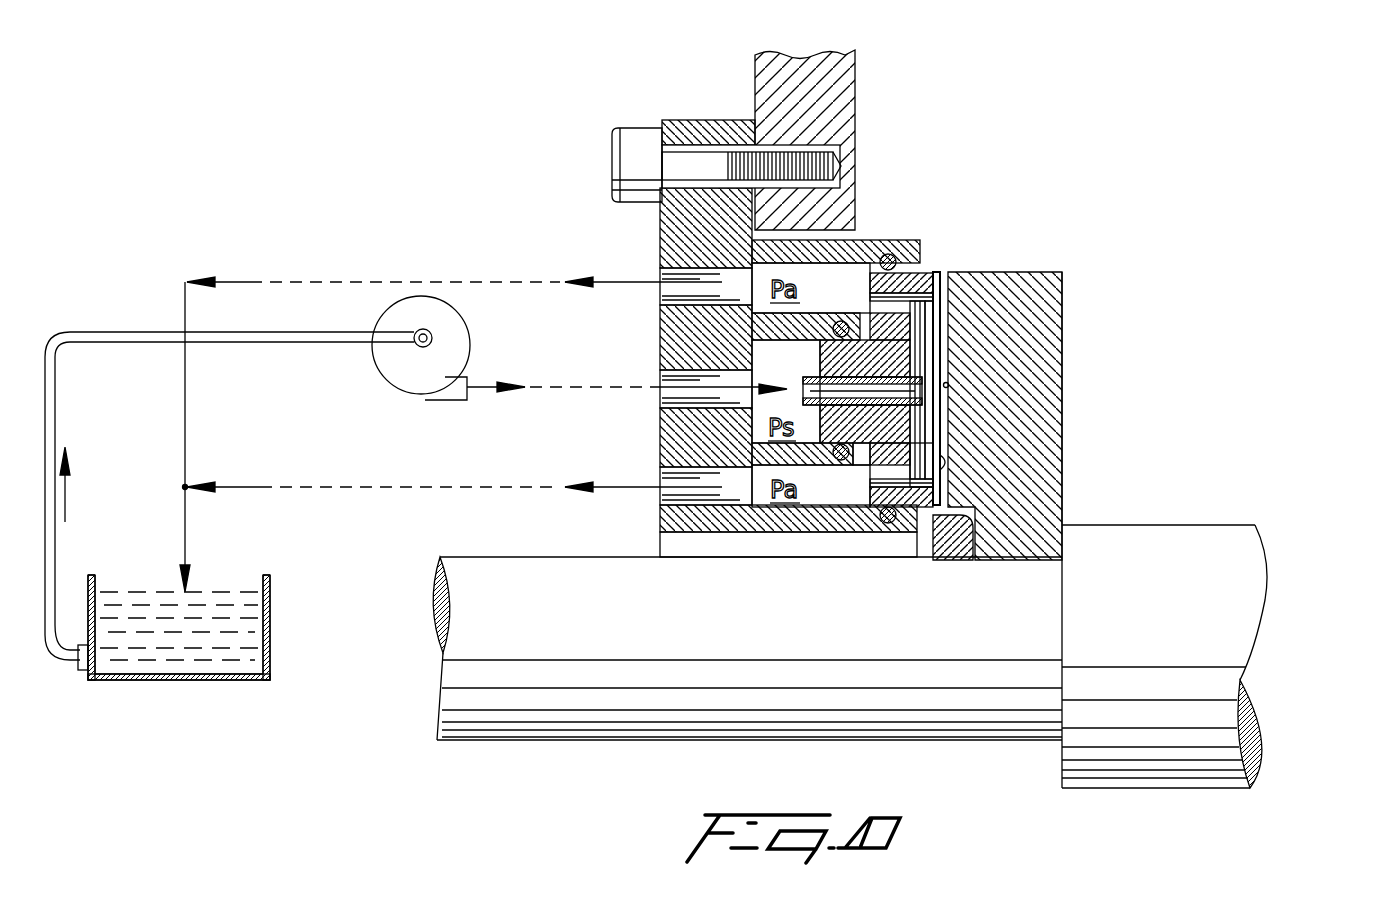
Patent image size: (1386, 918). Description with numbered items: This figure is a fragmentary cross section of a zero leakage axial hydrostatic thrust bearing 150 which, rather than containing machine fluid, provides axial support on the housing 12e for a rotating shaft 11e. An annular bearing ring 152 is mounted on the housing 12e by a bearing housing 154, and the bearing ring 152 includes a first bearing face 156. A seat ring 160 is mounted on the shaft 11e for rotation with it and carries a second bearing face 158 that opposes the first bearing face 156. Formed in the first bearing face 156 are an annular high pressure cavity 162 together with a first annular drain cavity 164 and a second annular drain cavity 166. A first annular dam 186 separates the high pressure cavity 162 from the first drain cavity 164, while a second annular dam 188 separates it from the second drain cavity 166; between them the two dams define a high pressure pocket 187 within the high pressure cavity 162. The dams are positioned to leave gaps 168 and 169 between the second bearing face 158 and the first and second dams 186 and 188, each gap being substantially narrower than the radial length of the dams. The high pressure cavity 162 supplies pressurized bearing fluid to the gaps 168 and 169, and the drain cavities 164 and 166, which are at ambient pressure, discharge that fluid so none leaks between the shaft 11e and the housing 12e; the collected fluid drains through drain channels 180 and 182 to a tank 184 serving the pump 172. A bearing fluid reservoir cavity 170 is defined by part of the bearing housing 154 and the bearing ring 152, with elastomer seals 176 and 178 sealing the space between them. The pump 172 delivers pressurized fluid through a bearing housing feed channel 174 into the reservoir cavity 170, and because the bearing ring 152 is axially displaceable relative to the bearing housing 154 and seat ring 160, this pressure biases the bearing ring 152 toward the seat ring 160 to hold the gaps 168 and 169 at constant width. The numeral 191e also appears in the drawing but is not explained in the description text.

The rotating shaft 11e is at (440, 735).
The housing 12e is at (848, 70).
The zero leakage axial hydrostatic thrust bearing 150 is at (543, 207).
The annular bearing ring 152 is at (937, 292).
The bearing housing 154 is at (845, 327).
The first bearing face 156 is at (925, 432).
The second bearing face 158 is at (947, 385).
The seat ring 160 is at (950, 462).
The annular high pressure cavity 162 is at (937, 362).
The first annular drain cavity 164 is at (1000, 272).
The second annular drain cavity 166 is at (960, 520).
The gap 168 is at (940, 292).
The gap 169 is at (942, 480).
The bearing fluid reservoir cavity 170 is at (777, 358).
The pump 172 is at (430, 396).
The bearing housing feed channel 174 is at (660, 377).
The elastomer seal 176 is at (836, 455).
The elastomer seal 178 is at (892, 262).
The drain channel 180 is at (655, 258).
The drain channel 182 is at (653, 557).
The tank 184 is at (170, 680).
The first annular dam 186 is at (942, 332).
The high pressure pocket 187 is at (928, 410).
The second annular dam 188 is at (920, 447).
The piston rod 191e is at (857, 443).